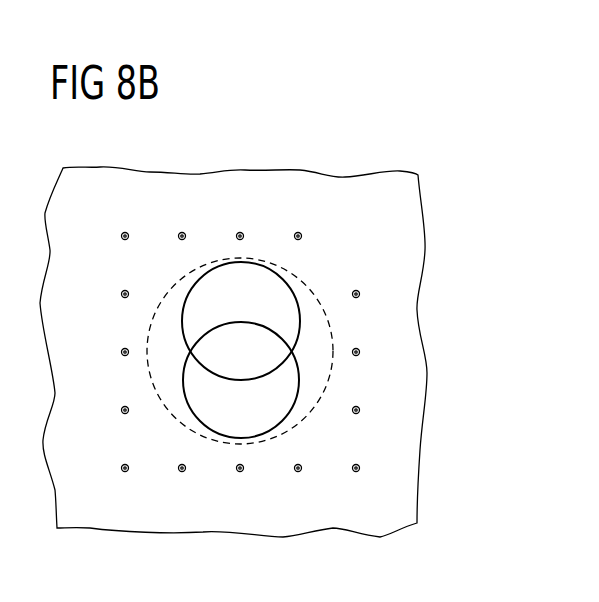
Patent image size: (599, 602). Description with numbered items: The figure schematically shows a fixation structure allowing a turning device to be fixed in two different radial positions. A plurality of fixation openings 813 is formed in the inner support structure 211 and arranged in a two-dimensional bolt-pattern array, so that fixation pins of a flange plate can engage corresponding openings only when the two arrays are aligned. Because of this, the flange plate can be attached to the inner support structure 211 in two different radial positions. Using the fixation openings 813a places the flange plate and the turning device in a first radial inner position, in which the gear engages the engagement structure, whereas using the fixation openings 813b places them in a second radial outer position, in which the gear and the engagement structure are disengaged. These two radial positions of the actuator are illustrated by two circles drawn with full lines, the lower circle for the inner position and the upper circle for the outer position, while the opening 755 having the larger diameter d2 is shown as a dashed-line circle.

The inner support structure 211 is at (345, 182).
The opening 755 is at (216, 258).
The diameter d2 is at (300, 282).
The fixation openings 813 is at (178, 470).
The fixation openings 813a is at (366, 286).
The fixation openings 813b is at (116, 229).